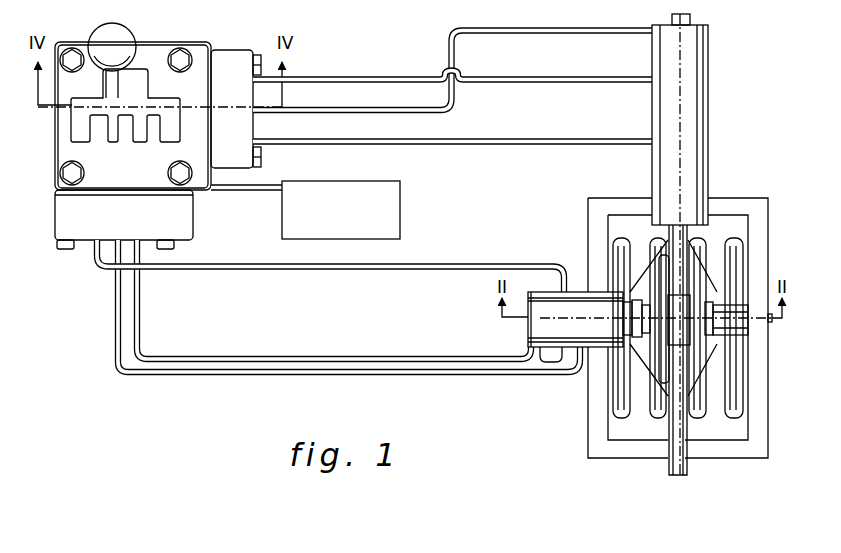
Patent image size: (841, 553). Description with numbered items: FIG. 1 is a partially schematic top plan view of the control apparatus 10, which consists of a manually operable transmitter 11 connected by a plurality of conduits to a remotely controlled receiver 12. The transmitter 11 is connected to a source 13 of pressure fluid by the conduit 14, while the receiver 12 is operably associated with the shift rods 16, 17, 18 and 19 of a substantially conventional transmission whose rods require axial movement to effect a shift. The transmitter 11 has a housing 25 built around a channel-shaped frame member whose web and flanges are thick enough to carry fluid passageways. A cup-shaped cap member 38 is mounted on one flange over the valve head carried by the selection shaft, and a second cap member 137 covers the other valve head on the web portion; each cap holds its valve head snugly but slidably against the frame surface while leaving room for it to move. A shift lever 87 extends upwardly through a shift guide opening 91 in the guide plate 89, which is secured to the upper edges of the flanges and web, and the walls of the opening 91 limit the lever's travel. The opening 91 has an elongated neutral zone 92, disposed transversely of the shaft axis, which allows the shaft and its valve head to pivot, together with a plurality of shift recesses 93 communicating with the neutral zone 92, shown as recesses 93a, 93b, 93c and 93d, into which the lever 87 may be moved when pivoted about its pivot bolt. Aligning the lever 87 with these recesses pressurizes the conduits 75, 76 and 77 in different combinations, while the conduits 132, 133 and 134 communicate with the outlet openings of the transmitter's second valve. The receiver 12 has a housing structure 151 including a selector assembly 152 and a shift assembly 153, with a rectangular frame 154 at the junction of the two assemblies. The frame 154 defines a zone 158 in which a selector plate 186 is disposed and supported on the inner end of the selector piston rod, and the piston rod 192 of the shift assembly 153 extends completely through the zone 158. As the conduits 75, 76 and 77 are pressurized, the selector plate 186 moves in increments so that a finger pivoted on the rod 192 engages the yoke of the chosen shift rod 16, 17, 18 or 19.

The control apparatus 10 is at (247, 390).
The transmitter 11 is at (50, 232).
The receiver 12 is at (727, 182).
The source of pressure fluid 13 is at (382, 221).
The conduit 14 is at (237, 190).
The shift rod 16 is at (618, 397).
The shift rod 17 is at (660, 399).
The shift rod 18 is at (697, 410).
The shift rod 19 is at (738, 415).
The housing 25 is at (185, 45).
The cup-shaped cap member 38 is at (178, 226).
The conduit 75 is at (192, 271).
The conduit 76 is at (140, 375).
The conduit 77 is at (238, 356).
The shift lever 87 is at (106, 83).
The shift guide plate 89 is at (145, 50).
The shift guide opening 91 is at (80, 116).
The neutral zone 92 is at (143, 100).
The shift recesses 93 is at (163, 144).
The shift recess 93a is at (172, 128).
The shift recess 93b is at (138, 122).
The shift recess 93c is at (106, 130).
The shift recess 93d is at (78, 140).
The conduit 132 is at (323, 140).
The conduit 133 is at (315, 108).
The conduit 134 is at (325, 77).
The cap member 137 is at (238, 58).
The housing structure 151 is at (603, 193).
The selector assembly 152 is at (587, 300).
The shift assembly 153 is at (687, 78).
The rectangular frame 154 is at (726, 450).
The zone 158 is at (662, 432).
The selector plate 186 is at (693, 262).
The piston rod 192 is at (675, 474).